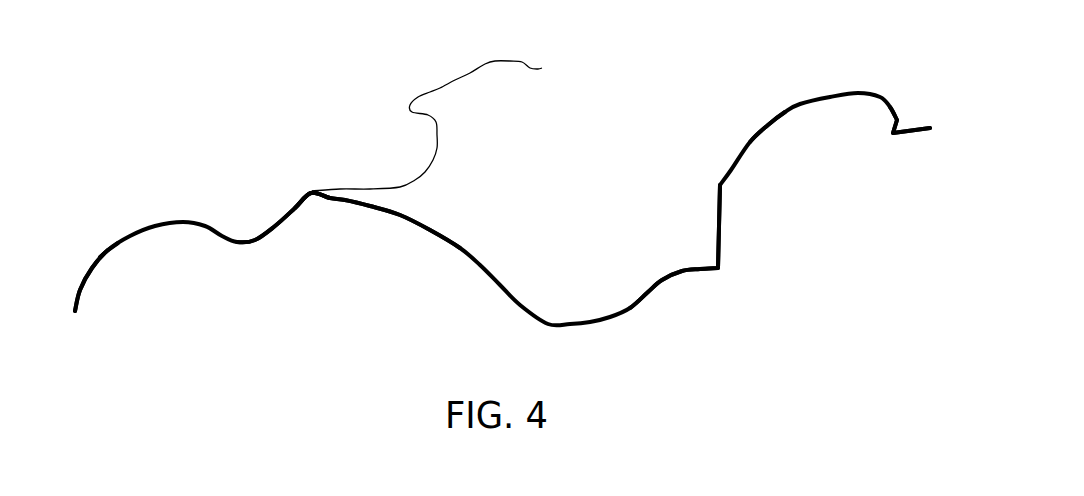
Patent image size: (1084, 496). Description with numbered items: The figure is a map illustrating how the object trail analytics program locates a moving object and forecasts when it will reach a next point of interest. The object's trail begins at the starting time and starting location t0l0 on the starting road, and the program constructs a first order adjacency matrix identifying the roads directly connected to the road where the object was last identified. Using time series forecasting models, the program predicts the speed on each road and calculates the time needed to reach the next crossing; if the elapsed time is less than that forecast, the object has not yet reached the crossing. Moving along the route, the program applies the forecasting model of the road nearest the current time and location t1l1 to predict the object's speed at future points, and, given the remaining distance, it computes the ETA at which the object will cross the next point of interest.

The starting time and starting location t0l0 is at (108, 247).
The current time and location t1l1 is at (768, 125).
The estimated time of arrival ETA is at (930, 128).